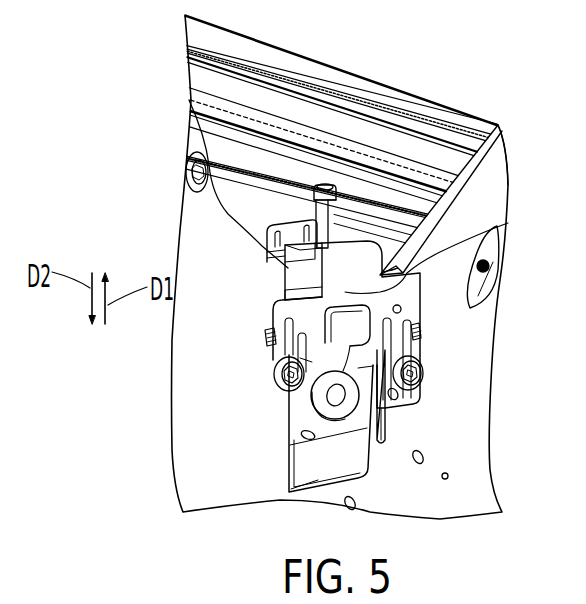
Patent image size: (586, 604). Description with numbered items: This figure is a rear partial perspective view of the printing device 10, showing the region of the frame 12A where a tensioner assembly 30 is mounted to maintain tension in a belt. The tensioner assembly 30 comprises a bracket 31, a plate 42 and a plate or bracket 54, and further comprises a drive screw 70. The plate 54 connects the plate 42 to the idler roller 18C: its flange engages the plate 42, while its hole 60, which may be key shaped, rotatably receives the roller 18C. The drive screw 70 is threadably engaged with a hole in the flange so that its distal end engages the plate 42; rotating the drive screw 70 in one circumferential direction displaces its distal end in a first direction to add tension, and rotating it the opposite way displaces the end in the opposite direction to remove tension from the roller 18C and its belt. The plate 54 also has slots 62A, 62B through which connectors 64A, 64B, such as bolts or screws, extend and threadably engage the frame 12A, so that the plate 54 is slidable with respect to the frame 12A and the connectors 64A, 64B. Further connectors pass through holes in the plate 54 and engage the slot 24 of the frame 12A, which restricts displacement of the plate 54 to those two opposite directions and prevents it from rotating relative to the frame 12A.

The printing device 10 is at (157, 134).
The frame 12A is at (495, 167).
The idler roller 18C is at (385, 412).
The slot 24 is at (385, 447).
The tensioner assembly 30 is at (373, 206).
The bracket 31 is at (277, 244).
The plate 42 is at (293, 275).
The plate 54 is at (508, 223).
The hole 60 is at (335, 406).
The slot 62A is at (266, 338).
The slot 62B is at (418, 332).
The connector 64A is at (274, 385).
The connector 64B is at (423, 373).
The drive screw 70 is at (340, 197).